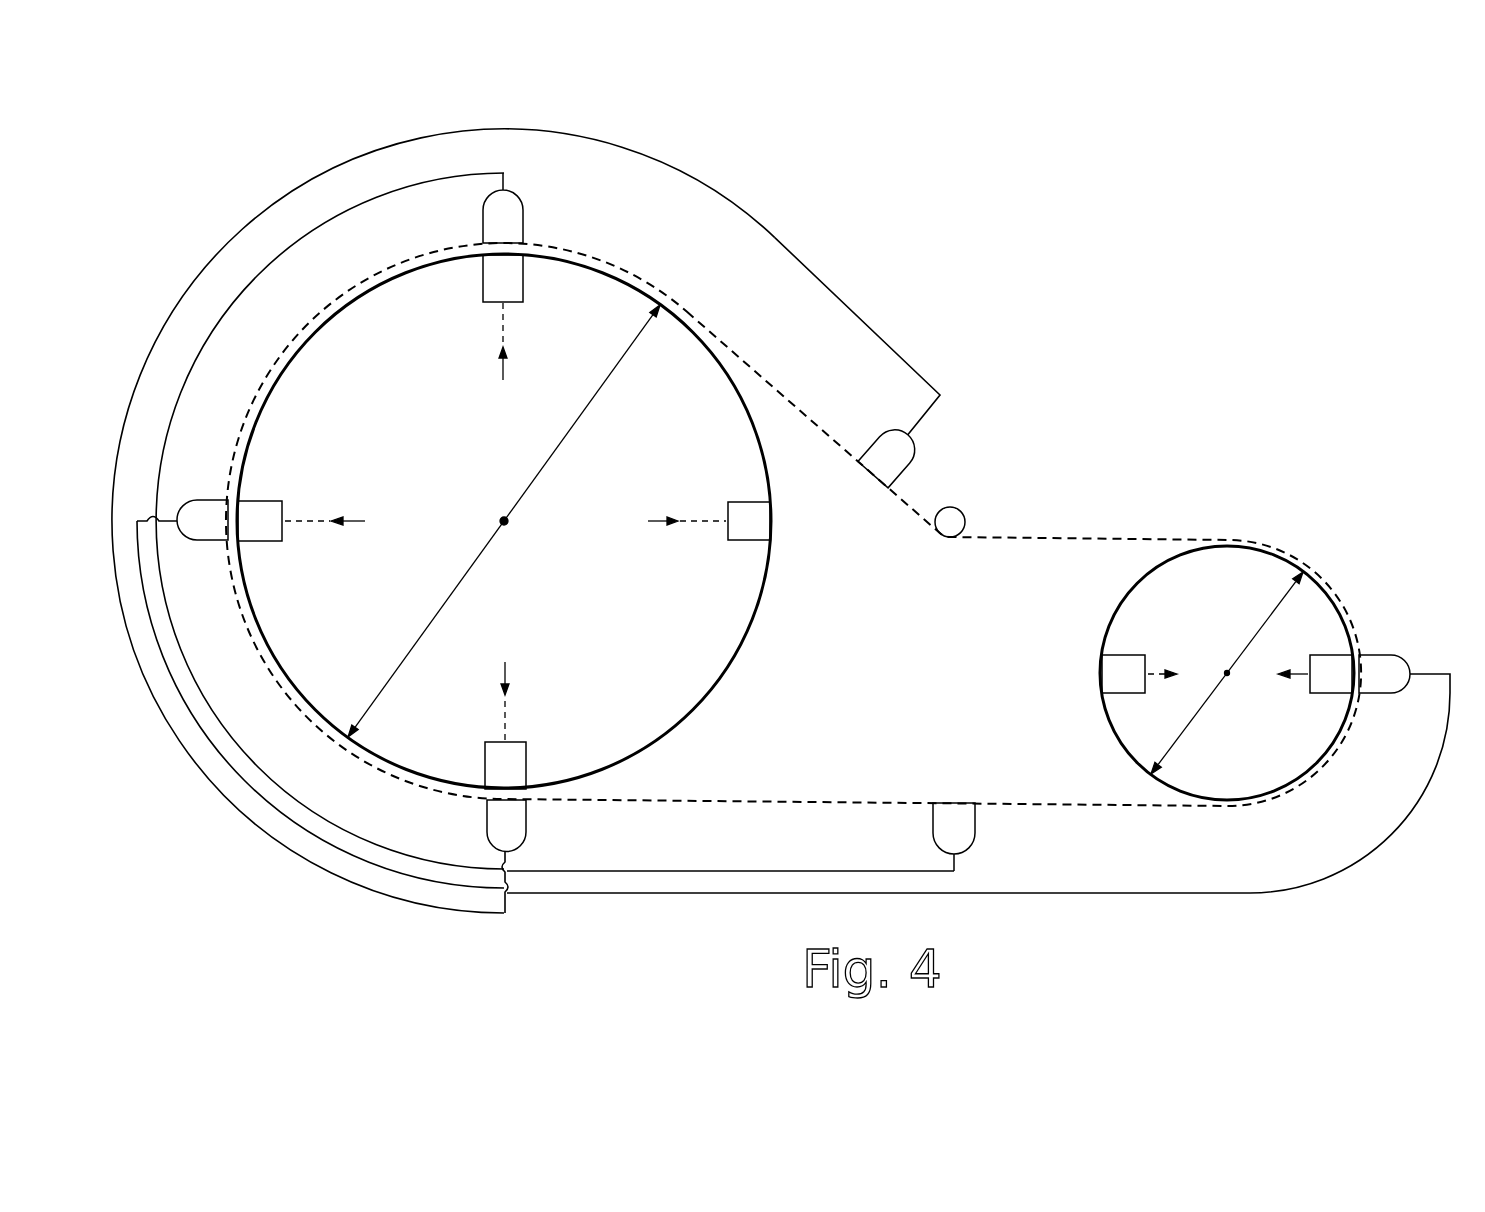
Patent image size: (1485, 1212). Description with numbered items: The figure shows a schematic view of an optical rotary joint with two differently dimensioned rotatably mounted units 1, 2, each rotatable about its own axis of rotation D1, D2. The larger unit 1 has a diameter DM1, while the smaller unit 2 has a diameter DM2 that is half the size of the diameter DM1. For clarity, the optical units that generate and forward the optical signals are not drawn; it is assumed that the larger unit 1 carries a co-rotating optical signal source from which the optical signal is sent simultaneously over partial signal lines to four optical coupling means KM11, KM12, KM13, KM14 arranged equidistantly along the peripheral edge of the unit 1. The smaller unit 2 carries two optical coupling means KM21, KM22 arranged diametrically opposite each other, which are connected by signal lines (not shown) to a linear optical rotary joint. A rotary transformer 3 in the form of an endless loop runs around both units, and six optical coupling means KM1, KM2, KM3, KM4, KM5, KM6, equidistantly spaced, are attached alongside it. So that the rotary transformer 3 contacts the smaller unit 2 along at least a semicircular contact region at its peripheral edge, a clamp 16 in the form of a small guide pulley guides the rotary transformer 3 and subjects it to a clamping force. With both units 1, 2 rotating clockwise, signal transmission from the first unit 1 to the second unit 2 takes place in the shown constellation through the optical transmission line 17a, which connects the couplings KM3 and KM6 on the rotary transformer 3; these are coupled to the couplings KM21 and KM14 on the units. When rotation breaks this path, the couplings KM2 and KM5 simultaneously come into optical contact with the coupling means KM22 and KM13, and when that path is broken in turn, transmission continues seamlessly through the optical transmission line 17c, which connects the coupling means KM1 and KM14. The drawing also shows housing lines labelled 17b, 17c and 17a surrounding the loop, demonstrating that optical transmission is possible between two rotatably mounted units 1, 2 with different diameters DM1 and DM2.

The rotatably mounted unit 1 is at (650, 640).
The rotatably mounted unit 2 is at (1245, 769).
The rotary transformer 3 is at (1070, 540).
The clamp 16 is at (957, 517).
The optical transmission line 17a is at (1222, 893).
The housing wall 17b is at (298, 852).
The optical transmission line 17c is at (760, 871).
The optical coupling means KM1 is at (525, 222).
The optical coupling means KM2 is at (876, 439).
The optical coupling means KM3 is at (1403, 657).
The optical coupling means KM4 is at (975, 827).
The optical coupling means KM5 is at (528, 820).
The optical coupling means KM6 is at (202, 498).
The optical coupling means KM11 is at (525, 288).
The optical coupling means KM12 is at (735, 500).
The optical coupling means KM13 is at (530, 760).
The optical coupling means KM14 is at (267, 498).
The optical coupling means KM21 is at (1335, 657).
The optical coupling means KM22 is at (1120, 653).
The diameter DM1 is at (504, 521).
The diameter DM2 is at (1227, 673).
The axis of rotation D1 is at (508, 526).
The axis of rotation D2 is at (1230, 677).